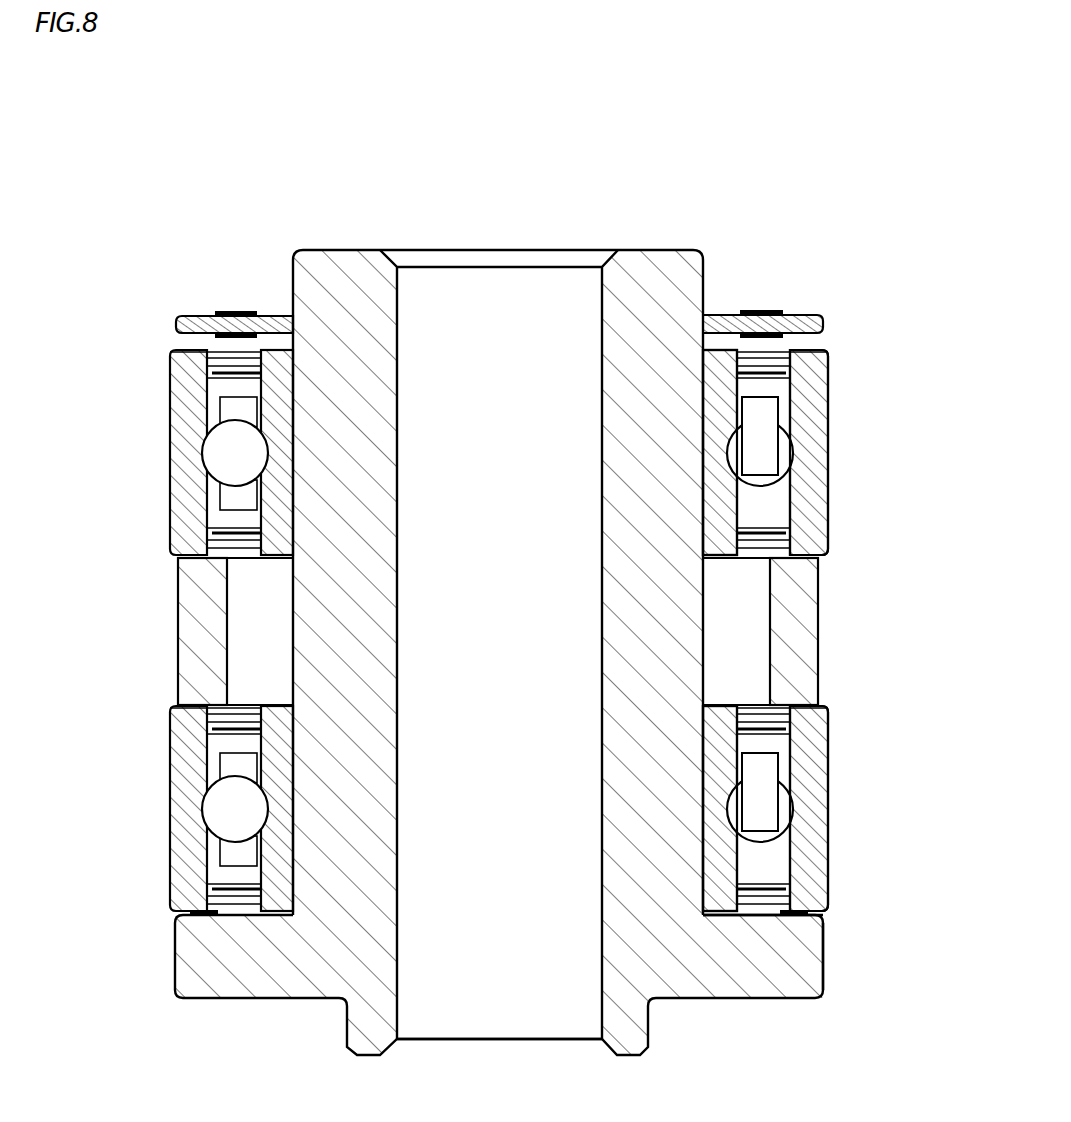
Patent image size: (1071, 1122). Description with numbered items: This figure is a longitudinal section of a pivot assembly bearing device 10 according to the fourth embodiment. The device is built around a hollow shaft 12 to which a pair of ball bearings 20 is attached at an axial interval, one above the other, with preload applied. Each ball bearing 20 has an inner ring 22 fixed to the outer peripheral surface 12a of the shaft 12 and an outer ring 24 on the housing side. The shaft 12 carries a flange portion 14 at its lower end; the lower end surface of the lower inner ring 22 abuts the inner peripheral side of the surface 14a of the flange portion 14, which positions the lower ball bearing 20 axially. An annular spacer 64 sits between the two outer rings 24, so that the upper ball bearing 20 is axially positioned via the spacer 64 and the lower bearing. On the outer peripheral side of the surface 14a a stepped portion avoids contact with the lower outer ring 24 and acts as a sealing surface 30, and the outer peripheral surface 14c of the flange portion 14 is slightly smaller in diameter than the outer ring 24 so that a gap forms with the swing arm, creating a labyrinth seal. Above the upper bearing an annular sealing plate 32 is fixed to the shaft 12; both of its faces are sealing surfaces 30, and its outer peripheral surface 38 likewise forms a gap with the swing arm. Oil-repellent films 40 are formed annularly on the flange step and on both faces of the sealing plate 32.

The pivot assembly bearing device 10 is at (300, 173).
The shaft 12 is at (345, 280).
The outer peripheral surface of the shaft 12a is at (703, 628).
The flange portion 14 is at (222, 965).
The surface of the flange portion facing the ball bearing 14a is at (735, 895).
The outer peripheral surface of the flange portion 14c is at (828, 915).
The ball bearing 20 is at (160, 458).
The inner ring 22 is at (728, 504).
The outer ring 24 is at (812, 445).
The sealing surface 30 is at (870, 968).
The annular sealing plate 32 is at (195, 318).
The outer peripheral surface of the annular sealing plate 38 is at (827, 323).
The oil-repellent film 40 is at (822, 910).
The spacer 64 is at (190, 635).